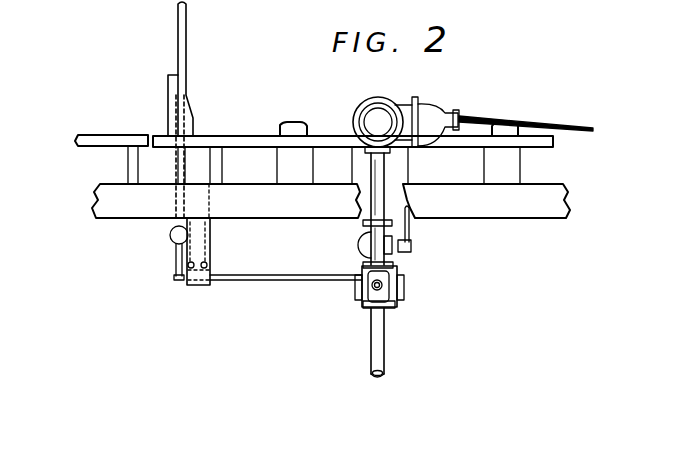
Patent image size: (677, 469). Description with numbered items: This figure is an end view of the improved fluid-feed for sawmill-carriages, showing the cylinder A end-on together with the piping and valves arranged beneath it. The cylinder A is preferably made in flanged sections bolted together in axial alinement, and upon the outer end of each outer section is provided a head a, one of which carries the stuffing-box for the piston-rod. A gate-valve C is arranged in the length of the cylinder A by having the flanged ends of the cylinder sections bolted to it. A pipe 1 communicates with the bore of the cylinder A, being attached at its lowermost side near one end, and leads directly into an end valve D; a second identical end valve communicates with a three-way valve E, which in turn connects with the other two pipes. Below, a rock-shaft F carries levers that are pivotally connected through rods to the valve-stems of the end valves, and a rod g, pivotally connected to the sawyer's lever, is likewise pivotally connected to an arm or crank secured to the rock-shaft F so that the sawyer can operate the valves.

The head a is at (187, 33).
The rod g is at (175, 260).
The rock-shaft F is at (283, 281).
The pipe 1 is at (372, 195).
The three-way valve E is at (405, 250).
The end valve D is at (398, 302).
The cylinder A is at (363, 115).
The gate-valve C is at (418, 112).